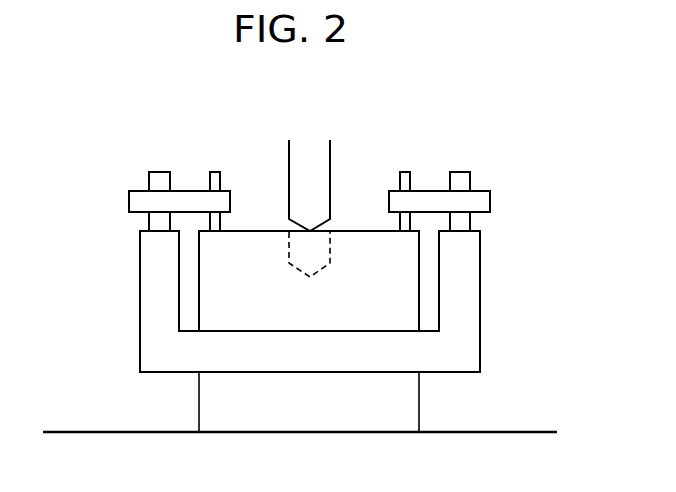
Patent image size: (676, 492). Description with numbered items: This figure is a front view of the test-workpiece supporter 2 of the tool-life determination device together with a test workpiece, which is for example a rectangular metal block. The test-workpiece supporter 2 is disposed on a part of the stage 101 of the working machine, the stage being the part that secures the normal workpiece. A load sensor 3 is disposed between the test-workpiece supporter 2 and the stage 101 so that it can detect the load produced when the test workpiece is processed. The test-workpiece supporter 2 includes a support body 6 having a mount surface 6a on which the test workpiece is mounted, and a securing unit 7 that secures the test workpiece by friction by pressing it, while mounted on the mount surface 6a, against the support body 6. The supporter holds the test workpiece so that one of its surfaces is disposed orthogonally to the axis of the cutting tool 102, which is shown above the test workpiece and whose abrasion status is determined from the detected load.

The test-workpiece supporter 2 is at (95, 157).
The load sensor 3 is at (419, 400).
The support body 6 is at (480, 292).
The mount surface 6a is at (358, 331).
The securing unit 7 is at (410, 177).
The stage 101 is at (65, 431).
The cutting tool 102 is at (330, 153).